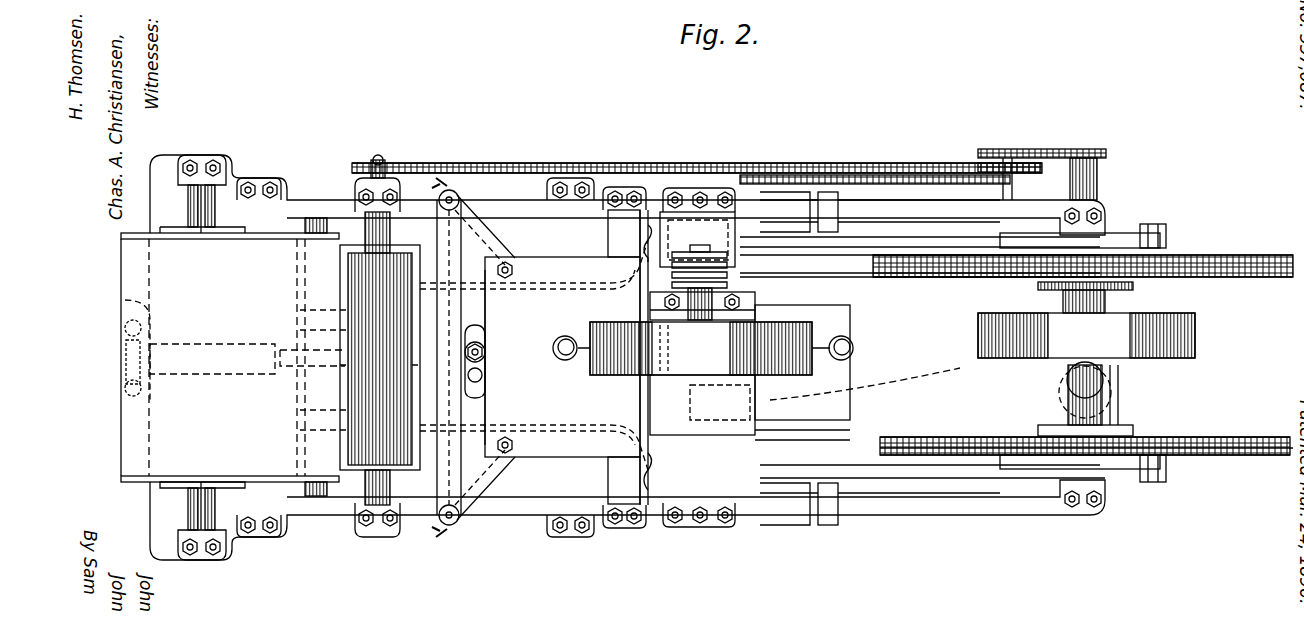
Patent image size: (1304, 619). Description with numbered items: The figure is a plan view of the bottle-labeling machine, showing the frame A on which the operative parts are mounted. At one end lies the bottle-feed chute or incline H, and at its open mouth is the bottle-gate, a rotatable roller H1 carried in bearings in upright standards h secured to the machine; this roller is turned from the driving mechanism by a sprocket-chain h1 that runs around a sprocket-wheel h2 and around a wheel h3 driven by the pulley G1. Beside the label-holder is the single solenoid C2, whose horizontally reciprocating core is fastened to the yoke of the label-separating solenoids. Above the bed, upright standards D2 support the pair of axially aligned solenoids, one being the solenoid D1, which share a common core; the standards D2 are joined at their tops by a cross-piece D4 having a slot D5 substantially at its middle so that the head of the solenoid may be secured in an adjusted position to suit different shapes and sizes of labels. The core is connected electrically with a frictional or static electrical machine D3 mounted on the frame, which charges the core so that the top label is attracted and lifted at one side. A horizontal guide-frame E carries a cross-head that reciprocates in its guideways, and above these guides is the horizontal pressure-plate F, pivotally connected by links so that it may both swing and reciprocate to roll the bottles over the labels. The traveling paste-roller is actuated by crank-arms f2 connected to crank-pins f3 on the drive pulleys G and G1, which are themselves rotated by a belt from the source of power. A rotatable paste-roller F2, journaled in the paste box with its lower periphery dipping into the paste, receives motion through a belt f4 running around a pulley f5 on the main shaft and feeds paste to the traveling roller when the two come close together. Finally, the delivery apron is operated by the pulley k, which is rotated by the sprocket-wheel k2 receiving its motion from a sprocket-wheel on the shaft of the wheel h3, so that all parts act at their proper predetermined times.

The frame A is at (670, 170).
The upright standards h is at (188, 196).
The sprocket-chain h1 is at (522, 172).
The sprocket-wheel h2 is at (375, 168).
The wheel h3 is at (1105, 165).
The pulley k is at (1037, 175).
The sprocket-wheel k2 is at (766, 178).
The bottle-feed chute H is at (220, 435).
The rotatable roller H1 is at (360, 358).
The horizontal frame E is at (295, 384).
The solenoid C2 is at (125, 386).
The solenoid D1 is at (486, 352).
The upright standard D2 is at (452, 203).
The static electrical machine D3 is at (672, 362).
The cross-piece D4 is at (473, 366).
The slot D5 is at (483, 375).
The pressure-plate F is at (548, 295).
The rotatable paste-roller F2 is at (857, 372).
The crank-arms f2 is at (1128, 233).
The crank-pins f3 is at (1156, 228).
The belt f4 is at (872, 445).
The pulley f5 is at (1130, 432).
The pulley G is at (1240, 455).
The pulley G1 is at (1240, 255).